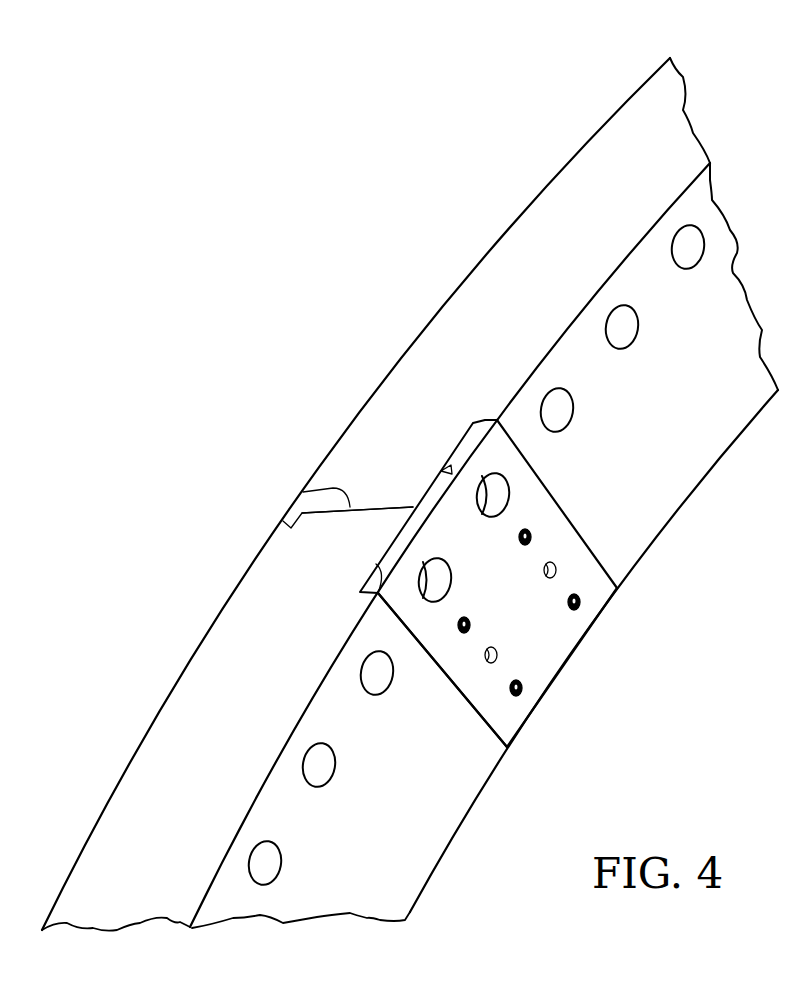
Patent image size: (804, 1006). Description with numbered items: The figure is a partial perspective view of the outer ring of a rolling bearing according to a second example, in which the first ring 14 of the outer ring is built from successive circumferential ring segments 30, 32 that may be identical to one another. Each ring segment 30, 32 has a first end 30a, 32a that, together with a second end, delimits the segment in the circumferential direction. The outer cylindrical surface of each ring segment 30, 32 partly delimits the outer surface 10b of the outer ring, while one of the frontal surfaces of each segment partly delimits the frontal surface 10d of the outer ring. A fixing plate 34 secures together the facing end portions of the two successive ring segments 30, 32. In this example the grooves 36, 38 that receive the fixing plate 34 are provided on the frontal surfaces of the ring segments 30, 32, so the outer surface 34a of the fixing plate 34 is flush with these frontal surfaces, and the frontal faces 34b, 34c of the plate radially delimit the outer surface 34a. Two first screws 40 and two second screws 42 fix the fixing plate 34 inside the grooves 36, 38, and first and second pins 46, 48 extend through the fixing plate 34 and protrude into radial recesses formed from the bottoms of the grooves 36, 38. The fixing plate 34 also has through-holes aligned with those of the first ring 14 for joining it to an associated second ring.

The outer surface 10b is at (640, 153).
The frontal surface 10d is at (340, 870).
The first ring 14 is at (563, 74).
The ring segment 30 is at (432, 370).
The first end 30a is at (291, 521).
The ring segment 32 is at (121, 918).
The first end 32a is at (303, 492).
The fixing plate 34 is at (430, 621).
The outer surface 34a is at (503, 560).
The frontal face 34b is at (614, 600).
The frontal face 34c is at (473, 422).
The groove 36 is at (443, 468).
The groove 38 is at (368, 578).
The first screws 40 is at (533, 533).
The second screws 42 is at (472, 622).
The first pin 46 is at (549, 578).
The second pin 48 is at (488, 664).